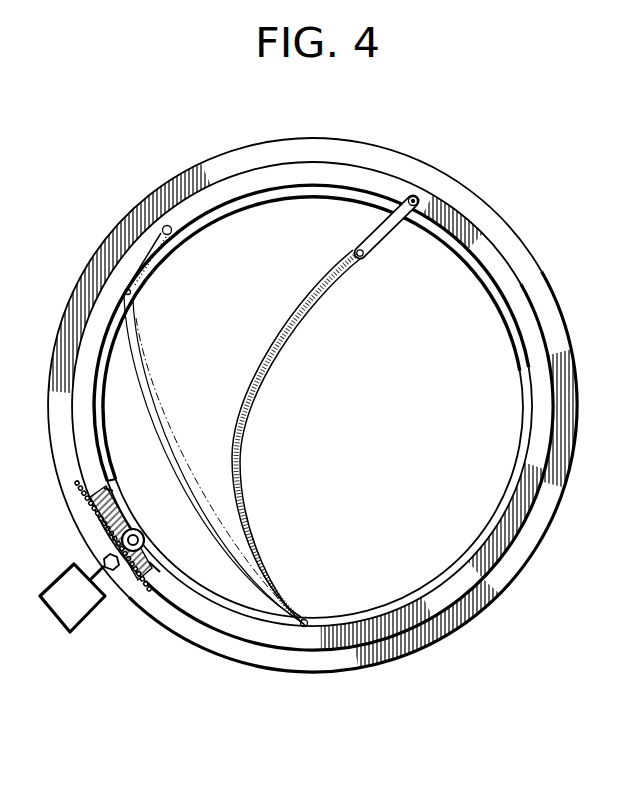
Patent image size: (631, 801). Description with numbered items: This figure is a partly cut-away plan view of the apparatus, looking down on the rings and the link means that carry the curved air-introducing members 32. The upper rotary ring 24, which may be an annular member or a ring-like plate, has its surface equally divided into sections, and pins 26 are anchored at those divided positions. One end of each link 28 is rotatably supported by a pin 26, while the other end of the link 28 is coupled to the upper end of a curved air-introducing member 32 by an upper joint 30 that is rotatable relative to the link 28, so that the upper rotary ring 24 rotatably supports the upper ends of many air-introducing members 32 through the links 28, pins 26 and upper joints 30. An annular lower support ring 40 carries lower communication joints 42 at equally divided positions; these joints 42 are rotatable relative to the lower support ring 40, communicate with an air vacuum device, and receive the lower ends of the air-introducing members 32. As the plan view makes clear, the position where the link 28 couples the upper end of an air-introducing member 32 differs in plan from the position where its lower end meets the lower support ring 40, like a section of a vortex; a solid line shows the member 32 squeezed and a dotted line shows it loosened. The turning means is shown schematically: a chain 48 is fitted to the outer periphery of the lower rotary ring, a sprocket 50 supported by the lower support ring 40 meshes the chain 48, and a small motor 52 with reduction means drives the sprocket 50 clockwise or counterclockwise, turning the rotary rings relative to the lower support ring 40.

The upper rotary ring 24 is at (493, 542).
The pin 26 is at (418, 198).
The link 28 is at (160, 266).
The upper joint 30 is at (361, 258).
The curved air-introducing member 32 is at (290, 344).
The lower support ring 40 is at (397, 162).
The lower communication joint 42 is at (307, 628).
The chain 48 is at (150, 598).
The sprocket 50 is at (103, 552).
The small motor 52 is at (62, 603).